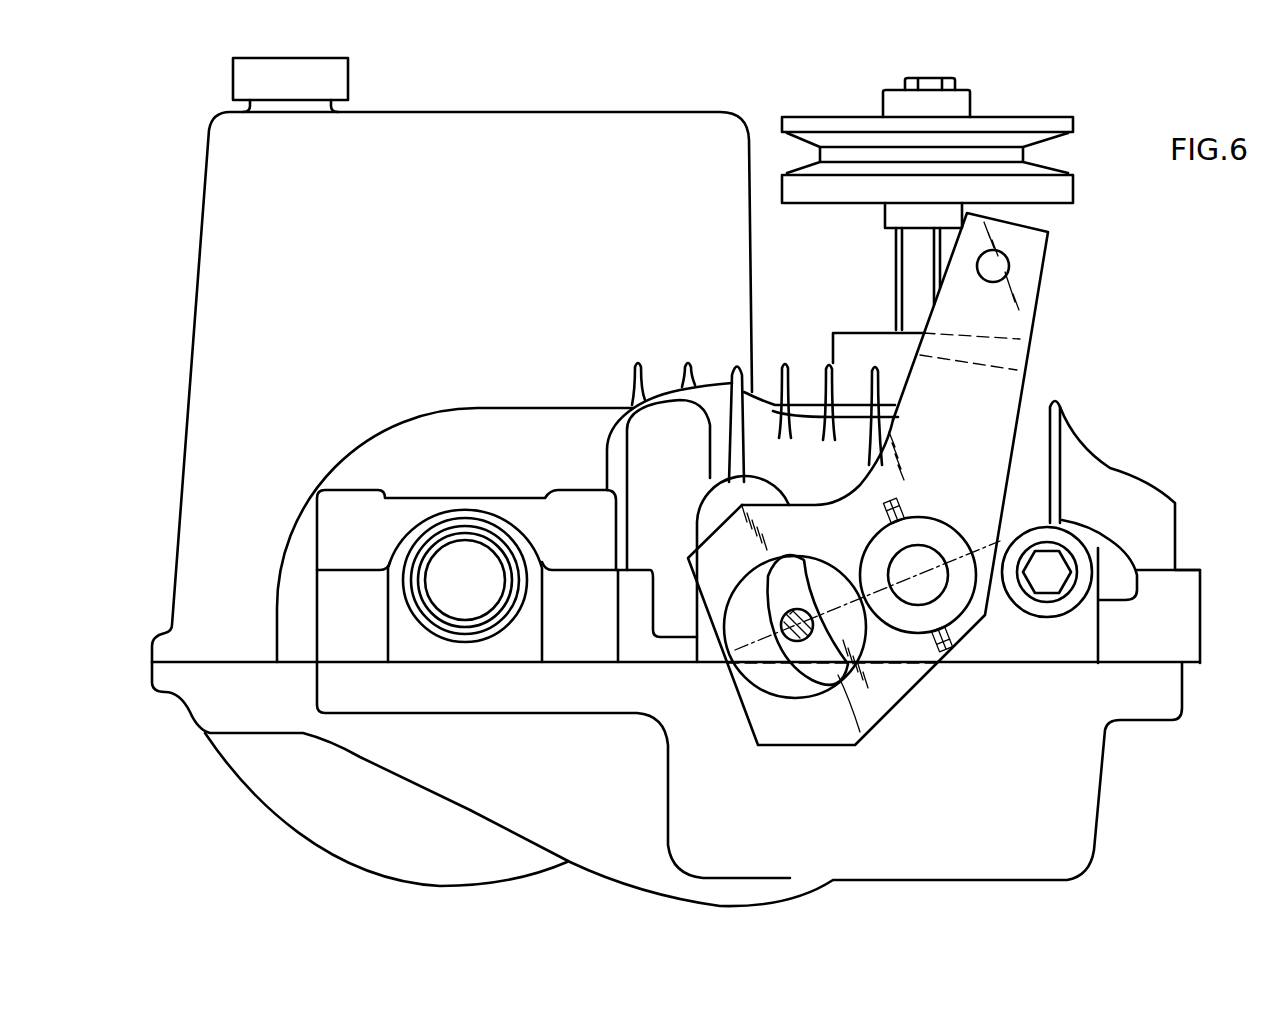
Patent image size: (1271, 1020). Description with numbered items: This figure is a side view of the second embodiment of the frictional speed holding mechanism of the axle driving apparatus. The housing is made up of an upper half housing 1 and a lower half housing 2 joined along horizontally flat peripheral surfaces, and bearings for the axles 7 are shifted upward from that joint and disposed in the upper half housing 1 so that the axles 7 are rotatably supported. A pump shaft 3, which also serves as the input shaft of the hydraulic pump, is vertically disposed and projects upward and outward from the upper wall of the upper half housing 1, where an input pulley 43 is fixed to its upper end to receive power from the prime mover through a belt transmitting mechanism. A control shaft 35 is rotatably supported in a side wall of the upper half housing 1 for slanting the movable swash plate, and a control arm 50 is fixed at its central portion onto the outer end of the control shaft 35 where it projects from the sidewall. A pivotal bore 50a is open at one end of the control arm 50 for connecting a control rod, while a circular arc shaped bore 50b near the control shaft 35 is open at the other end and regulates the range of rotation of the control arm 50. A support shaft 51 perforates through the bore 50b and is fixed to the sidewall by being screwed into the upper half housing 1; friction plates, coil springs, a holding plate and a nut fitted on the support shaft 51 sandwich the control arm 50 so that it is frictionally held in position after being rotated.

The upper half housing 1 is at (180, 522).
The lower half housing 2 is at (247, 782).
The pump shaft 3 is at (897, 268).
The axles 7 is at (470, 560).
The control shaft 35 is at (950, 590).
The input pulley 43 is at (1052, 116).
The control arm 50 is at (1028, 388).
The pivotal bore 50a is at (1010, 266).
The circular arc shaped bore 50b is at (860, 732).
The support shaft 51 is at (775, 632).